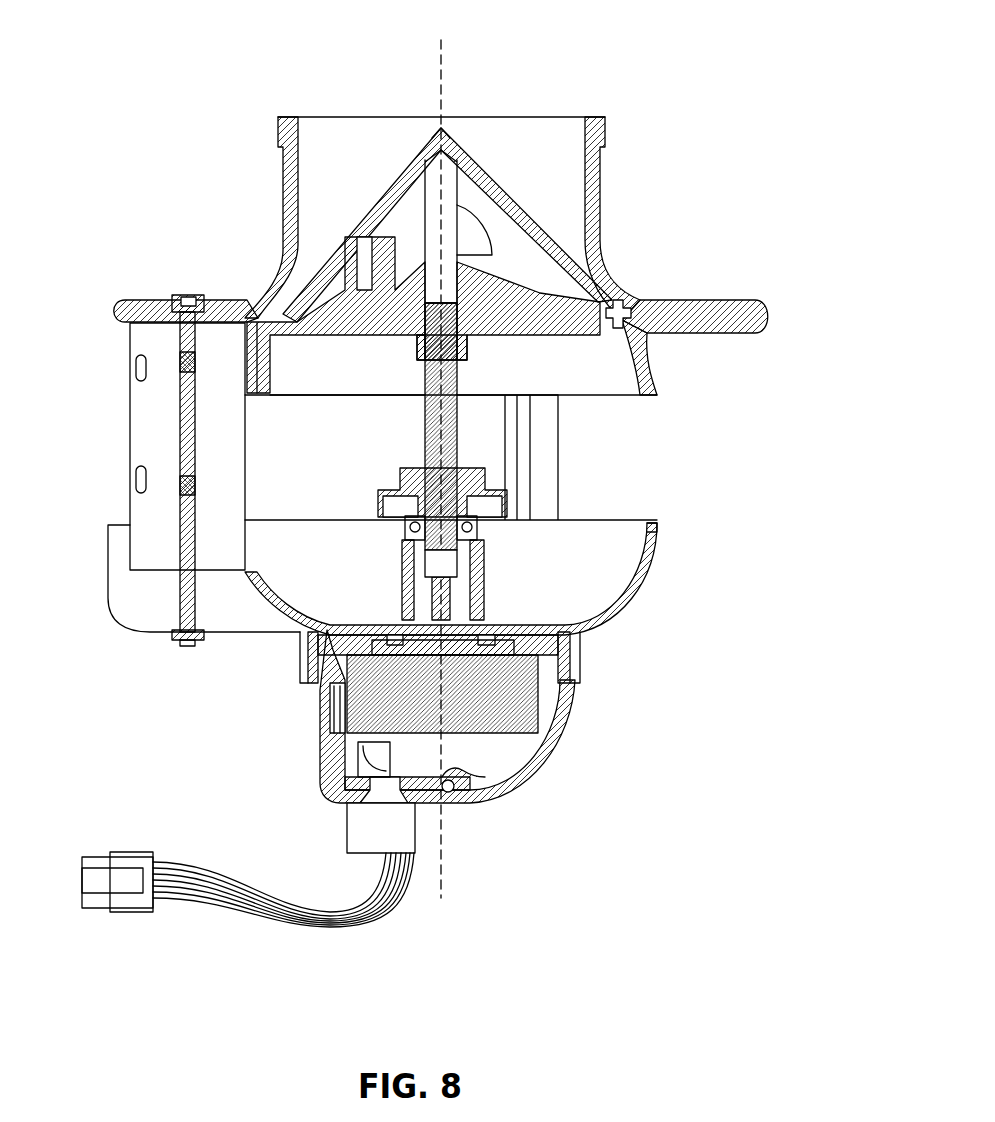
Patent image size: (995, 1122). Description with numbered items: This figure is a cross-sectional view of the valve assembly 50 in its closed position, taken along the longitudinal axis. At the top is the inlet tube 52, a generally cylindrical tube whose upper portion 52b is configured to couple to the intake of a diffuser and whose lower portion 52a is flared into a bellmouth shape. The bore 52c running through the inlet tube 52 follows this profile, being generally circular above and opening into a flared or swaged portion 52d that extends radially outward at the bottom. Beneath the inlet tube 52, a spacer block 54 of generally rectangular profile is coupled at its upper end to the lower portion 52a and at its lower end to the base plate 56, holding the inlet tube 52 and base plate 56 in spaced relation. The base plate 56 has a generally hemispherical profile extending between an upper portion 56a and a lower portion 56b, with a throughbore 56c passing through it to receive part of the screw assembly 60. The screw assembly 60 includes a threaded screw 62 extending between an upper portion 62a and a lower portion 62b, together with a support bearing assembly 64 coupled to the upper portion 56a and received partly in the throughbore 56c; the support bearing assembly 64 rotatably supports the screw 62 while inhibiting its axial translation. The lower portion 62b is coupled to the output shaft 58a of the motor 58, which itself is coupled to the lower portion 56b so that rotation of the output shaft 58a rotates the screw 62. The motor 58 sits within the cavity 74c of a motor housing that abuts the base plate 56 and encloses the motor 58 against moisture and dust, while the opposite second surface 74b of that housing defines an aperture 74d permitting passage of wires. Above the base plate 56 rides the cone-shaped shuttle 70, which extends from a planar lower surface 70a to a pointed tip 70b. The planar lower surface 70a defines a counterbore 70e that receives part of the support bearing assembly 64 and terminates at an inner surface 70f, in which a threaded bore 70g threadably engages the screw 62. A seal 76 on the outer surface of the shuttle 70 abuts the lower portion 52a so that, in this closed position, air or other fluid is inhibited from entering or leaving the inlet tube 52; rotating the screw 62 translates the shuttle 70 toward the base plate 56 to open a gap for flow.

The valve assembly 50 is at (781, 136).
The inlet tube 52 is at (511, 241).
The lower portion 52a is at (667, 357).
The upper portion 52b is at (603, 128).
The bore 52c is at (342, 140).
The flared or swaged portion 52d is at (688, 337).
The spacer block 54 is at (126, 501).
The base plate 56 is at (492, 602).
The upper portion 56a is at (654, 522).
The lower portion 56b is at (579, 633).
The throughbore 56c is at (389, 598).
The motor 58 is at (439, 699).
The output shaft 58a is at (341, 733).
The screw assembly 60 is at (363, 505).
The screw 62 is at (562, 429).
The upper portion 62a is at (459, 317).
The lower portion 62b is at (448, 560).
The support bearing assembly 64 is at (386, 476).
The shuttle 70 is at (354, 255).
The planar lower surface 70a is at (265, 395).
The tip 70b is at (441, 128).
The counterbore 70e is at (336, 372).
The inner surface 70f is at (248, 311).
The threaded bore 70g is at (438, 206).
The second surface 74b is at (463, 808).
The cavity 74c is at (504, 746).
The aperture 74d is at (339, 830).
The seal 76 is at (621, 300).